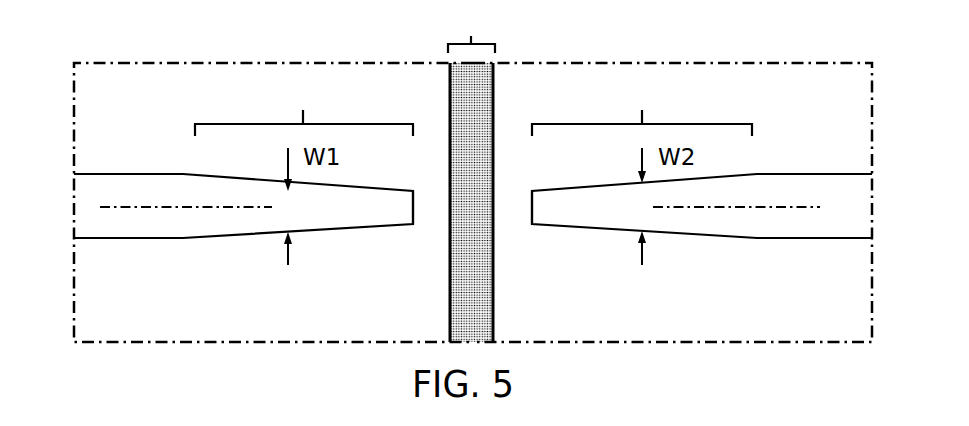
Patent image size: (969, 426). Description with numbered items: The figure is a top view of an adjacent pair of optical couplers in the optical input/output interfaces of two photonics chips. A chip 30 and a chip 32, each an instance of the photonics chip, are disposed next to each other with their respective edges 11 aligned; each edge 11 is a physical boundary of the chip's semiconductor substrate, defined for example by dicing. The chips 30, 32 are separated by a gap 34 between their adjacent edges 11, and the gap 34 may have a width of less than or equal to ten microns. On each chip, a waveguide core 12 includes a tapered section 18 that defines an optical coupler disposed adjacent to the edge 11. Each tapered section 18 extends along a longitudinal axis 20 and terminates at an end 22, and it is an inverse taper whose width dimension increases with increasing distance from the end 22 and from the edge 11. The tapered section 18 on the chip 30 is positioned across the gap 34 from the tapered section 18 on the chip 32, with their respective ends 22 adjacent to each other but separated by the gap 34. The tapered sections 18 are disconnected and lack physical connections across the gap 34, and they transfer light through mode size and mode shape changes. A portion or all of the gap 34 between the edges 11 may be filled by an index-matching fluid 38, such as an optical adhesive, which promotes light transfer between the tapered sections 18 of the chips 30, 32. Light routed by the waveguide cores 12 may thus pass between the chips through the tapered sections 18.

The edge 11 is at (448, 318).
The waveguide core 12 is at (121, 190).
The tapered section 18 is at (473, 109).
The longitudinal axis 20 is at (195, 207).
The end 22 is at (412, 212).
The chip 30 is at (129, 107).
The chip 32 is at (852, 107).
The gap 34 is at (471, 31).
The index-matching fluid 38 is at (467, 267).